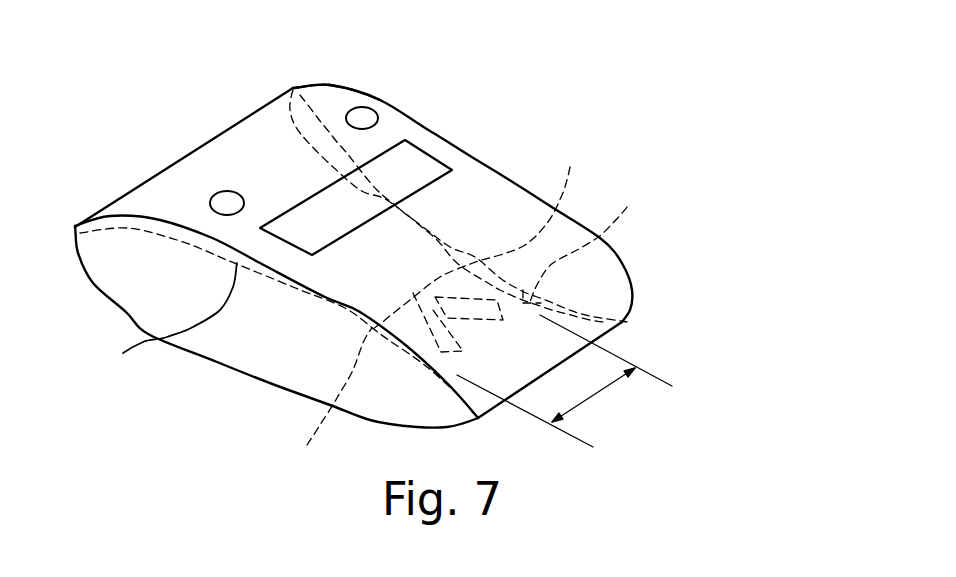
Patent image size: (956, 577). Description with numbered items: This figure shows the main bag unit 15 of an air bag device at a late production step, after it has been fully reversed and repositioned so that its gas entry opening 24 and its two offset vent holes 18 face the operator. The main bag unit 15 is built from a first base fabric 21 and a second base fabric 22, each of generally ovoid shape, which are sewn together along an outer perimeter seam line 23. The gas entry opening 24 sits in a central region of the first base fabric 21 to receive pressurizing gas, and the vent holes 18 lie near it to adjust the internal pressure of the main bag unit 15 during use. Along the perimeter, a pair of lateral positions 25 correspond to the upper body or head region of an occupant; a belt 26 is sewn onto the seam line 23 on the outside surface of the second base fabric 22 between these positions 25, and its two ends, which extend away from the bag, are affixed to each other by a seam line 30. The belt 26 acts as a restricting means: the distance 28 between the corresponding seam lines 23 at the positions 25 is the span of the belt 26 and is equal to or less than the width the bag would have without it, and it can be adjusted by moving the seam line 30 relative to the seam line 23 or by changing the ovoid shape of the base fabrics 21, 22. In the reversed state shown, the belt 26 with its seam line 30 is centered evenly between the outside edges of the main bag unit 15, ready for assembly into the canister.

The main bag unit 15 is at (482, 130).
The offset vent holes 18 is at (212, 201).
The first base fabric 21 is at (348, 88).
The second base fabric 22 is at (100, 286).
The outer perimeter seam line 23 is at (123, 353).
The gas entry opening 24 is at (427, 178).
The lateral positions 25 is at (365, 320).
The belt 26 is at (327, 407).
The distance 28 is at (597, 390).
The seam line 30 is at (480, 230).